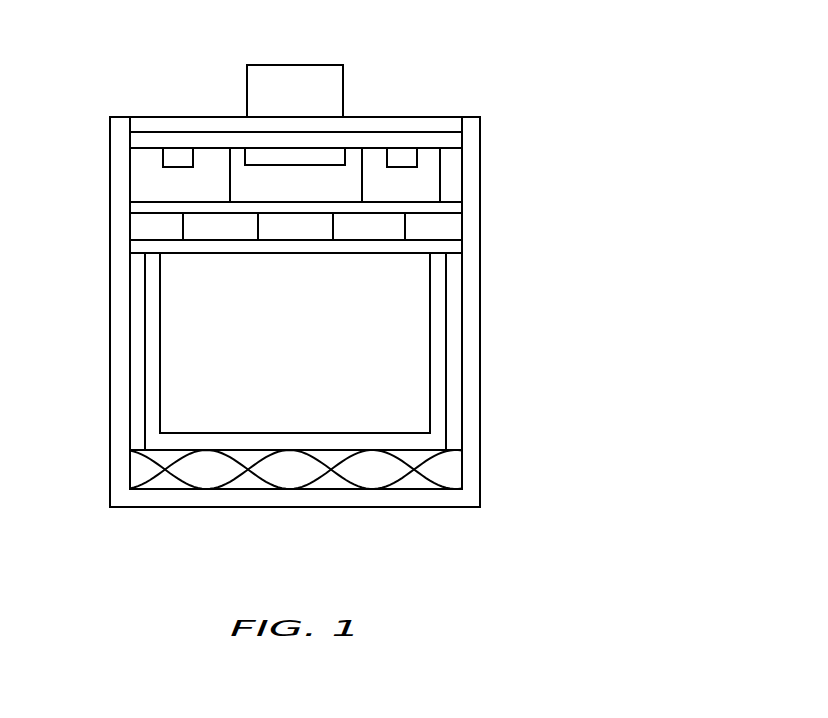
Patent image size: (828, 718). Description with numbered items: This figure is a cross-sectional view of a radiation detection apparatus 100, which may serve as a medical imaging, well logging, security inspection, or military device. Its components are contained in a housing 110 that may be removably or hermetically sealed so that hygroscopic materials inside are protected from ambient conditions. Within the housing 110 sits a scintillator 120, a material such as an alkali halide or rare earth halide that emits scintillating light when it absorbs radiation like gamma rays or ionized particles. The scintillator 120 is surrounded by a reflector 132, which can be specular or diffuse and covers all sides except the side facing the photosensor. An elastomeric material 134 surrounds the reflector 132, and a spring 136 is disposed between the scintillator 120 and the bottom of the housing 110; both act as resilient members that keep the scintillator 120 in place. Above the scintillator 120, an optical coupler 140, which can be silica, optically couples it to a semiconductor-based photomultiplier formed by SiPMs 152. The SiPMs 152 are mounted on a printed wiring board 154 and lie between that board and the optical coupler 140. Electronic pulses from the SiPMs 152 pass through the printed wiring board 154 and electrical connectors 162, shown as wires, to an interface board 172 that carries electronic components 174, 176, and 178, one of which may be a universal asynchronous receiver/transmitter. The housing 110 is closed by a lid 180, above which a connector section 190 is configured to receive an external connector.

The radiation detection apparatus 100 is at (612, 73).
The housing 110 is at (120, 382).
The scintillator 120 is at (275, 411).
The reflector 132 is at (155, 357).
The elastomeric material 134 is at (138, 345).
The spring 136 is at (290, 475).
The optical coupler 140 is at (138, 247).
The SiPMs 152 is at (225, 230).
The printed wiring board 154 is at (138, 206).
The electrical connectors 162 is at (360, 193).
The interface board 172 is at (433, 140).
The electronic component 174 is at (178, 158).
The electronic component 176 is at (272, 158).
The electronic component 178 is at (400, 158).
The lid 180 is at (403, 125).
The connector section 190 is at (296, 80).